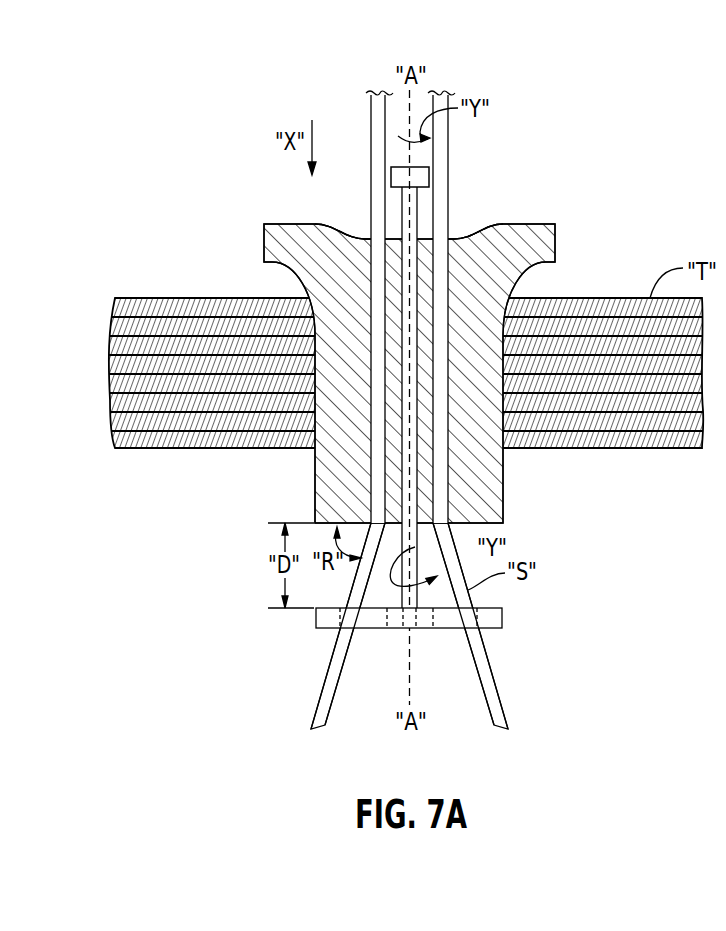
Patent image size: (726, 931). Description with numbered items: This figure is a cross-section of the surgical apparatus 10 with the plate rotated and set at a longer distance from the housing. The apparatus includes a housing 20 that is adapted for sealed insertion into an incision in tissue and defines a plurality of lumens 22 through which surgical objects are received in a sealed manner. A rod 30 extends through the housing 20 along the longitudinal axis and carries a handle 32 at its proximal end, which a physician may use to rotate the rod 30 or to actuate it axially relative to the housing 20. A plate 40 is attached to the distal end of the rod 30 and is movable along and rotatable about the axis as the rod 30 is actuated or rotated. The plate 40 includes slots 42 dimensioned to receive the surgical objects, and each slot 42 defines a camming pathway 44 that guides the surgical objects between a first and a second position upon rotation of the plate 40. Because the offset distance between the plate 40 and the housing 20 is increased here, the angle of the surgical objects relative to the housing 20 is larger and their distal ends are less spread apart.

The surgical apparatus 10 is at (619, 177).
The housing 20 is at (578, 243).
The lumens 22 is at (450, 238).
The rod 30 is at (401, 218).
The handle 32 is at (398, 167).
The plate 40 is at (503, 618).
The slots 42 is at (367, 628).
The camming section or pathway 44 is at (452, 628).